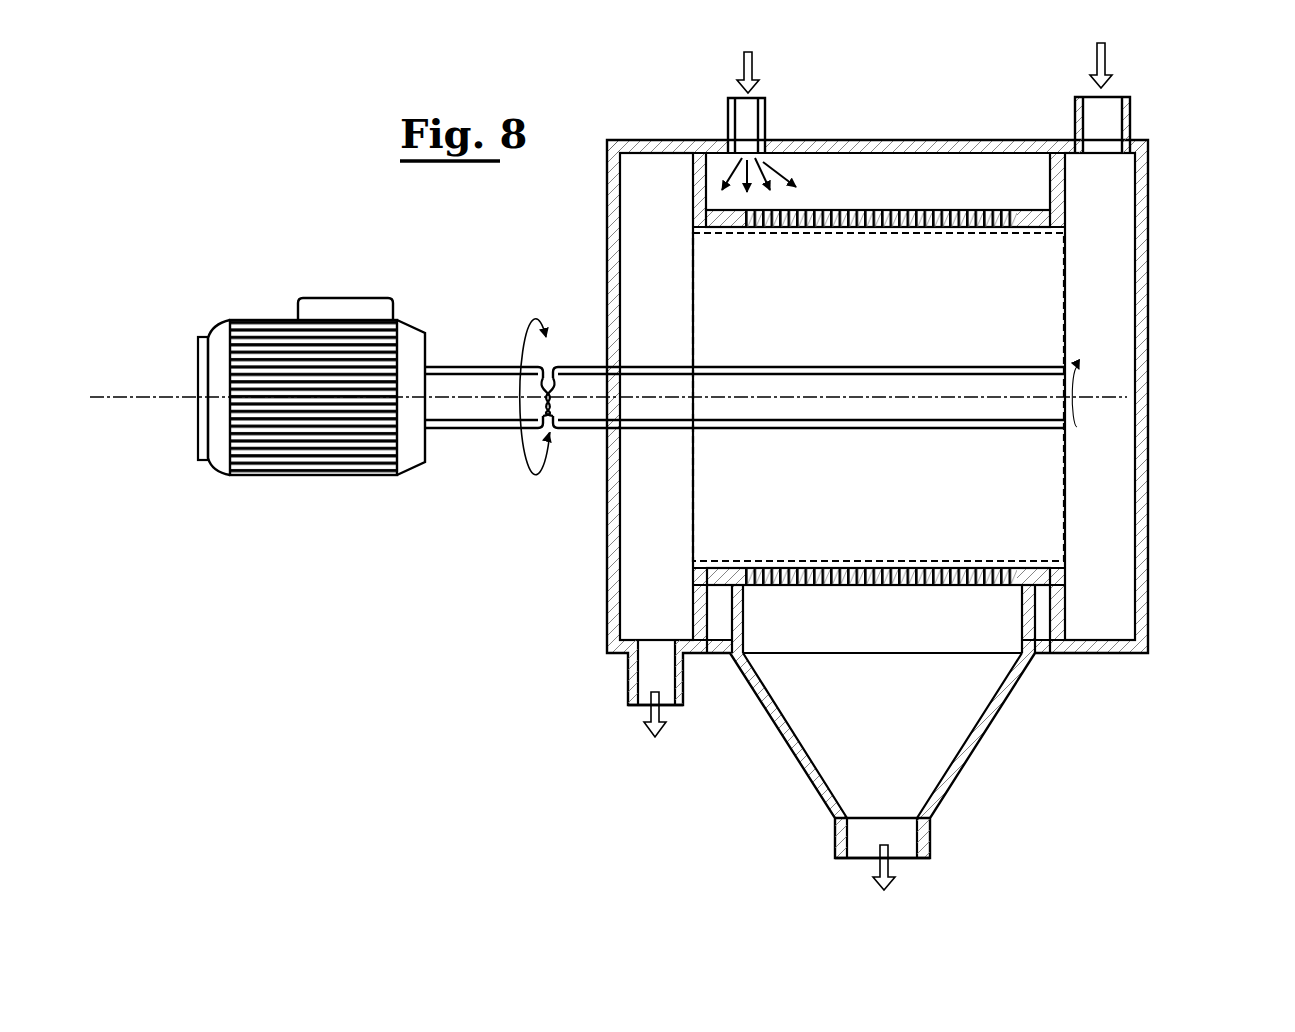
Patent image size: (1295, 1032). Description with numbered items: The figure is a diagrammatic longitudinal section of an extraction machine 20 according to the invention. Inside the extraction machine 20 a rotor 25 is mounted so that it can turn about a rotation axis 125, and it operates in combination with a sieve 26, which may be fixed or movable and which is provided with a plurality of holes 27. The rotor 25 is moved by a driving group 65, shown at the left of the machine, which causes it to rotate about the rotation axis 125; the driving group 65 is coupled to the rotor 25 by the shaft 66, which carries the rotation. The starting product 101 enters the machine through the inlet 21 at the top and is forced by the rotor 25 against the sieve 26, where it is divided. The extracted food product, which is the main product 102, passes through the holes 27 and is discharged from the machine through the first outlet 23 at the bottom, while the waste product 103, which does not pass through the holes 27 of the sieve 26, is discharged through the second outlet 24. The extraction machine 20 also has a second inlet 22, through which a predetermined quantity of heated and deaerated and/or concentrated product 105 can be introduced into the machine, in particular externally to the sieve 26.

The extraction machine 20 is at (1209, 726).
The inlet pipe 21 is at (1131, 127).
The second inlet 22 is at (728, 113).
The first outlet 23 is at (922, 838).
The second outlet 24 is at (628, 698).
The rotor 25 is at (1074, 314).
The sieve 26 is at (948, 206).
The holes 27 is at (927, 210).
The driving group 65 is at (325, 494).
The drive shaft 66 is at (490, 365).
The starting product 101 is at (1104, 62).
The main product 102 is at (880, 890).
The waste product 103 is at (660, 728).
The heated and deaerated and/or concentrated product 105 is at (744, 64).
The rotation axis 125 is at (97, 400).